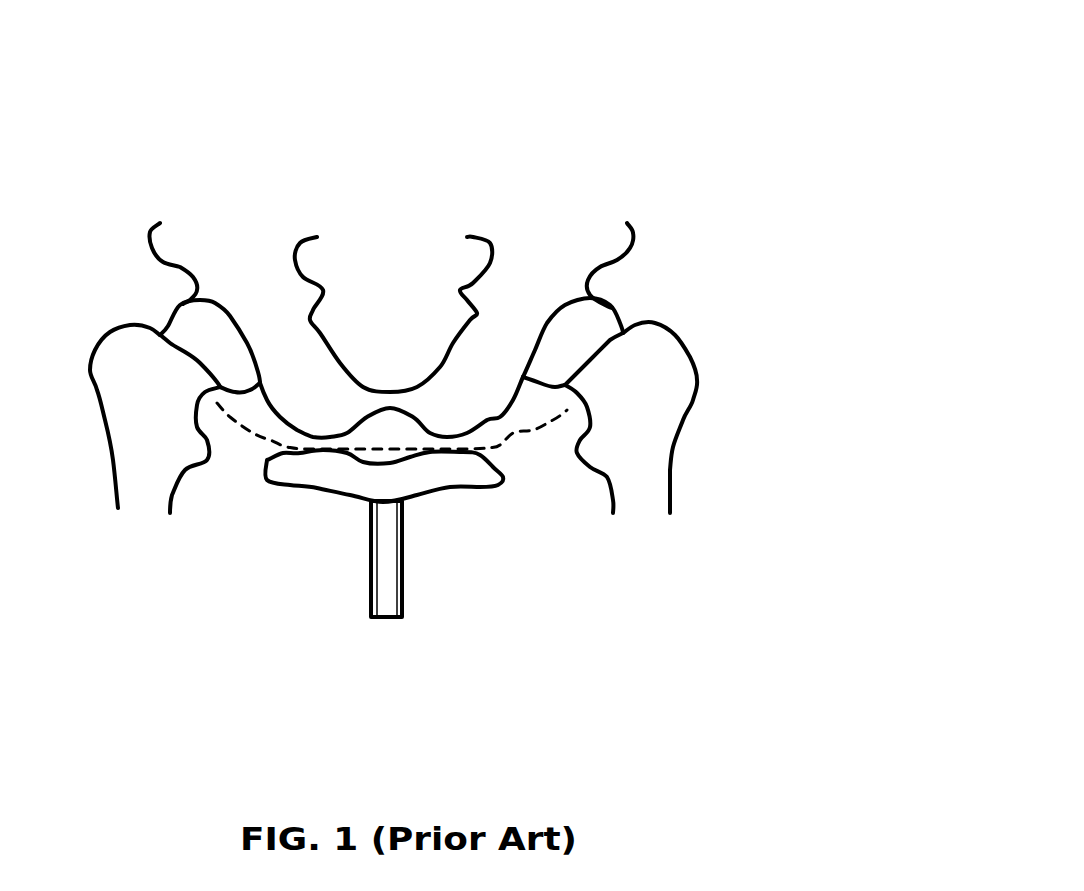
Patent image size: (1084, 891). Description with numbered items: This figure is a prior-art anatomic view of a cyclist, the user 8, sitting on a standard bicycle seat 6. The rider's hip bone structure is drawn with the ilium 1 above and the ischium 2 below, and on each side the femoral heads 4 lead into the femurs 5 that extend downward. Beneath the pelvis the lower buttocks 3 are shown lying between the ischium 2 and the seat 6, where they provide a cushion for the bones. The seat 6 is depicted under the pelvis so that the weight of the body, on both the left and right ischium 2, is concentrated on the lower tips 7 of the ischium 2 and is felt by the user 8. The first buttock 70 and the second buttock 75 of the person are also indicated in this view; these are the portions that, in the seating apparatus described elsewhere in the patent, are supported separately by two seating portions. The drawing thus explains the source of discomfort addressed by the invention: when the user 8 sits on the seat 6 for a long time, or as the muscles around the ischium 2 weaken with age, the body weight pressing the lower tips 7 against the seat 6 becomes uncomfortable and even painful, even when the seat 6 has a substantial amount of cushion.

The ilium 1 is at (258, 278).
The ischium 2 is at (448, 433).
The lower buttocks 3 is at (258, 436).
The femoral heads 4 is at (575, 332).
The femurs 5 is at (635, 443).
The seat 6 is at (425, 478).
The lower tips 7 is at (323, 437).
The user 8 is at (553, 257).
The first buttock 70 is at (265, 440).
The second buttock 75 is at (507, 425).